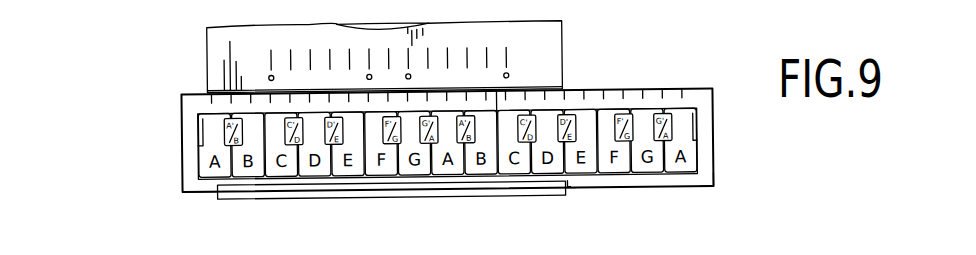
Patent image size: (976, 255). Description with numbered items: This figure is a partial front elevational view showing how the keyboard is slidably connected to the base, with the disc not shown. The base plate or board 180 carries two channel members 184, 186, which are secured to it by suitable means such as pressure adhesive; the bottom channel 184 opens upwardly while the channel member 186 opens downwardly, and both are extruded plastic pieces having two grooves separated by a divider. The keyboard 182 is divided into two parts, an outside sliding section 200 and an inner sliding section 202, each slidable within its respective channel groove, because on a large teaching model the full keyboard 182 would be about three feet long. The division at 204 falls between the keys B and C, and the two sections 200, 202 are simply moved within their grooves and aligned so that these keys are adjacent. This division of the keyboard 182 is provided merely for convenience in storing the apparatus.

The base plate 180 is at (545, 51).
The keyboard 182 is at (715, 152).
The bottom channel member 184 is at (243, 192).
The upper channel member 186 is at (213, 93).
The outside sliding section 200 is at (182, 190).
The inner sliding section 202 is at (705, 188).
The division 204 is at (500, 181).